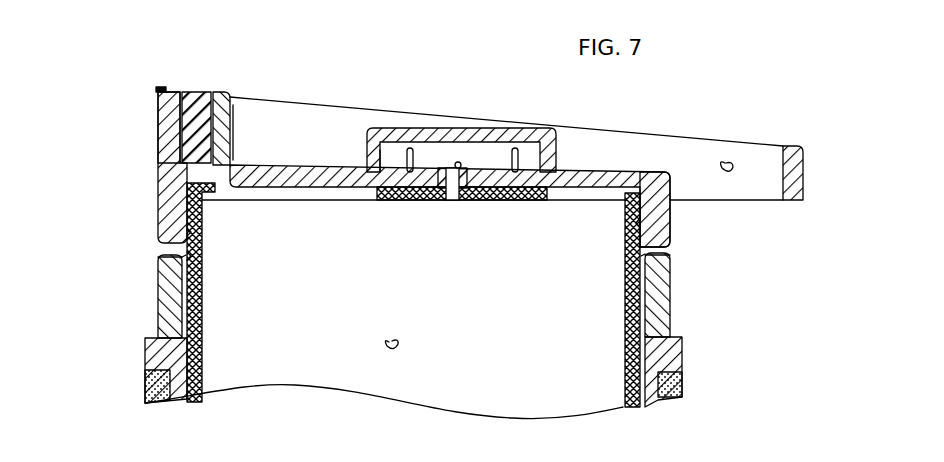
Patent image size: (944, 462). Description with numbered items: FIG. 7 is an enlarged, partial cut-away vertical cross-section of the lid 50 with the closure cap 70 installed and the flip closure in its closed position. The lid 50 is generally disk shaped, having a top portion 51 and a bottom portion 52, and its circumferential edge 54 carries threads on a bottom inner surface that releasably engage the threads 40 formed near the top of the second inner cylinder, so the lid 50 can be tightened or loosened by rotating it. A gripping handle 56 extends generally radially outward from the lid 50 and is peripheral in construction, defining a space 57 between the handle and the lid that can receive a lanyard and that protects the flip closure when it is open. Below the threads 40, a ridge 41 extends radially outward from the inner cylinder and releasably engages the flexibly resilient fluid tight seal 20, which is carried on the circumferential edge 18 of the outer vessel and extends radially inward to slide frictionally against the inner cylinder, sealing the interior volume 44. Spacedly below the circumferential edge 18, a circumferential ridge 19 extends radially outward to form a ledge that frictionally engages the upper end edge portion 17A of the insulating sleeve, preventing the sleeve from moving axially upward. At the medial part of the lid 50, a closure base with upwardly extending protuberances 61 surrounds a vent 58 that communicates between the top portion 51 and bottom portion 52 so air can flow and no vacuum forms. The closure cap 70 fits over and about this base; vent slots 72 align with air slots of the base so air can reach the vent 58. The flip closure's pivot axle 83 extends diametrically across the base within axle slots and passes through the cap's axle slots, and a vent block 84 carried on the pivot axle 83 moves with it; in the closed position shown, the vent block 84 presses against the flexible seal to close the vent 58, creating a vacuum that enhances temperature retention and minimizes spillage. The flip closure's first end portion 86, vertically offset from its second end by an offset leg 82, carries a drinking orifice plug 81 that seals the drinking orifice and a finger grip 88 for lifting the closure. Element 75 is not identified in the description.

The upper end edge portion 17A is at (147, 382).
The circumferential edge 18 is at (160, 278).
The circumferential ridge 19 is at (147, 346).
The flexibly resilient fluid tight seal 20 is at (162, 257).
The threads 40 is at (201, 231).
The ridge 41 is at (190, 260).
The interior volume 44 is at (394, 338).
The lid 50 is at (379, 98).
The top portion 51 is at (583, 171).
The bottom portion 52 is at (671, 219).
The circumferential edge 54 is at (162, 175).
The gripping handle 56 is at (790, 188).
The space 57 is at (733, 158).
The vent 58 is at (452, 200).
The protuberances 61 is at (372, 160).
The closure cap 70 is at (456, 128).
The vent slots 72 is at (508, 146).
The outer skirt layer 75 is at (158, 101).
The drinking orifice plug 81 is at (190, 93).
The offset leg 82 is at (235, 117).
The pivot axle 83 is at (483, 190).
The vent block 84 is at (447, 163).
The first end portion 86 is at (224, 91).
The finger grip 88 is at (163, 90).